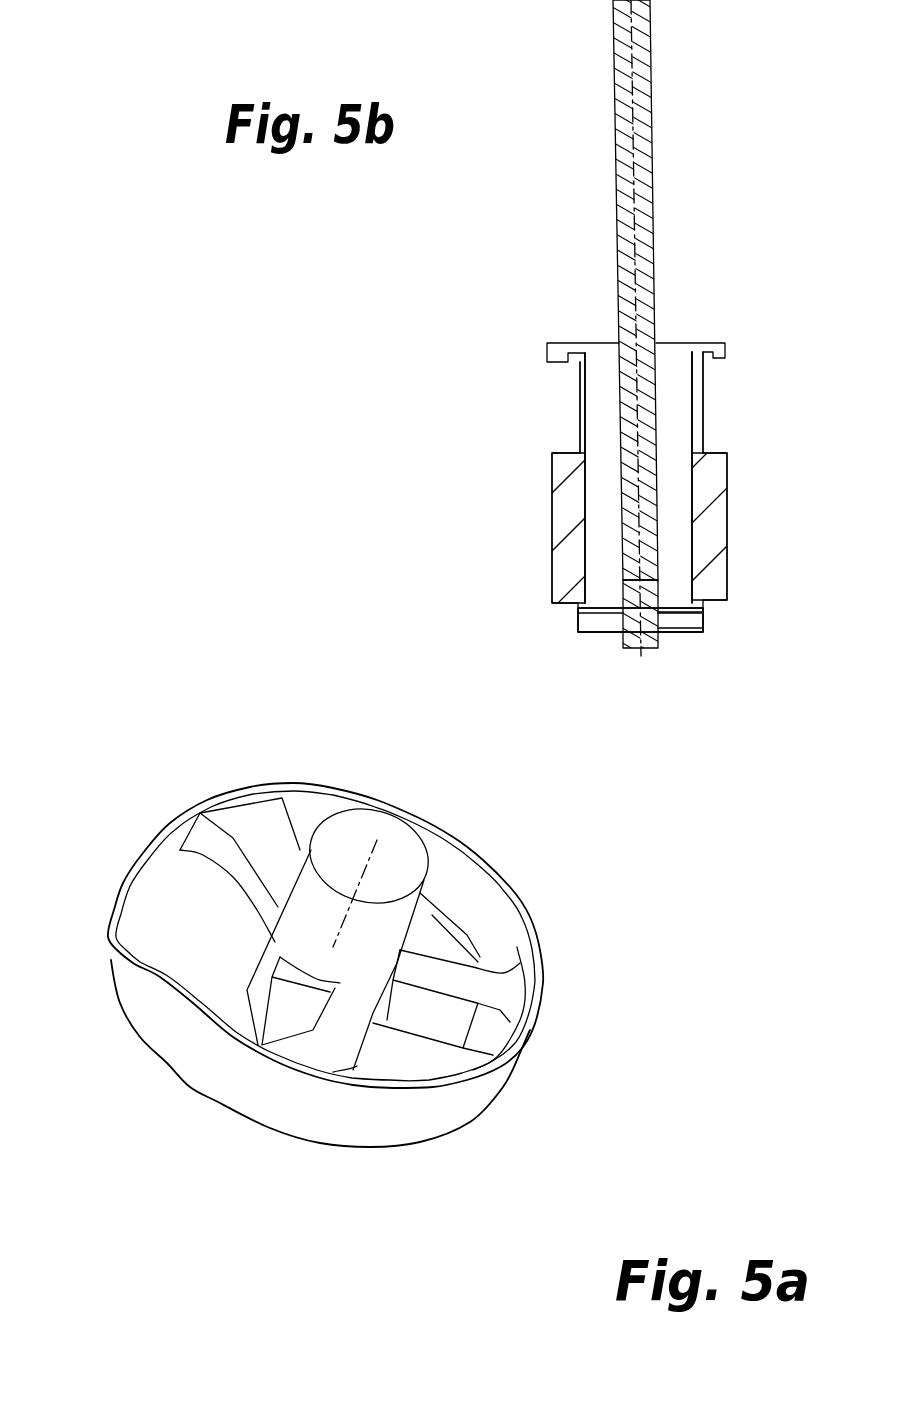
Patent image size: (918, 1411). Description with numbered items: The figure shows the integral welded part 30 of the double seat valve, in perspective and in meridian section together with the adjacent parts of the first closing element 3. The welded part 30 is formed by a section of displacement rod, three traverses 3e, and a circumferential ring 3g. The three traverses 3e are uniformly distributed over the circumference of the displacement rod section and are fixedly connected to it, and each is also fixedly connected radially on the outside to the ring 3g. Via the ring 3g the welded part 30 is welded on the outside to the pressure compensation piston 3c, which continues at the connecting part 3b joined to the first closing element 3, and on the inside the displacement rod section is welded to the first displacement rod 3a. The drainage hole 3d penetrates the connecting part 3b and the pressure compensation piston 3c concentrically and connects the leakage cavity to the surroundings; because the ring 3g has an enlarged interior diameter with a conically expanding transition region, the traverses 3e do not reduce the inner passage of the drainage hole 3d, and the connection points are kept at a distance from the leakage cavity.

In FIG. 5B, the first closing element 3 is at (552, 348).
In FIG. 5B, the first displacement rod 3a is at (633, 170).
In FIG. 5B, the connecting part 3b is at (583, 398).
In FIG. 5B, the pressure compensation piston 3c is at (570, 485).
In FIG. 5B, the drainage hole 3d is at (605, 428).
In FIG. 5B, the traverses 3e is at (687, 620).
In FIG. 5A, the traverses 3e is at (448, 1017).
In FIG. 5B, the ring 3g is at (578, 625).
In FIG. 5A, the ring 3g is at (442, 1116).
In FIG. 5B, the welded part 30 is at (612, 662).
In FIG. 5A, the welded part 30 is at (182, 778).